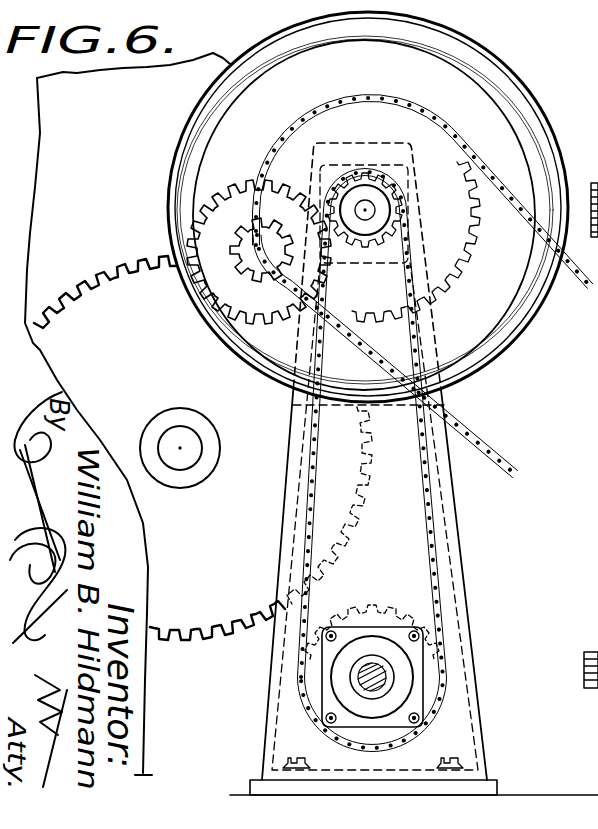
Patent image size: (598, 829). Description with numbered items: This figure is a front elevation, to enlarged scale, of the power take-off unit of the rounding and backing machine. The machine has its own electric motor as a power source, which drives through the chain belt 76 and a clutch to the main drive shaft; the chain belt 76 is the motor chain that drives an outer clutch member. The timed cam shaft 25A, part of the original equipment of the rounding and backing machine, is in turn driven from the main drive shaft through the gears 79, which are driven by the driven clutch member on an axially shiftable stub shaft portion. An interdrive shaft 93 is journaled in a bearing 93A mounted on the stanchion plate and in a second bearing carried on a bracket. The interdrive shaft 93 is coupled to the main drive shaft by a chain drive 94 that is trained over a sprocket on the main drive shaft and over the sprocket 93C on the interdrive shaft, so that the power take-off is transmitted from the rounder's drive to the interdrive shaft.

The timed cam shaft 25A is at (192, 444).
The chain belt 76 is at (472, 431).
The gears 79 is at (225, 233).
The interdrive shaft 93 is at (385, 680).
The bearing 93A is at (343, 632).
The sprocket 93C is at (384, 616).
The chain drive 94 is at (436, 557).